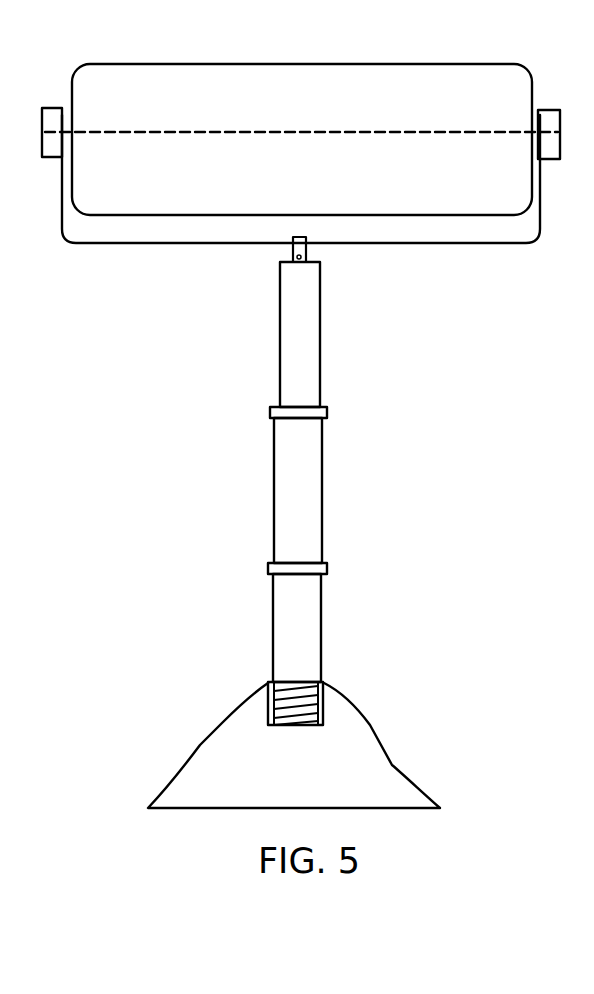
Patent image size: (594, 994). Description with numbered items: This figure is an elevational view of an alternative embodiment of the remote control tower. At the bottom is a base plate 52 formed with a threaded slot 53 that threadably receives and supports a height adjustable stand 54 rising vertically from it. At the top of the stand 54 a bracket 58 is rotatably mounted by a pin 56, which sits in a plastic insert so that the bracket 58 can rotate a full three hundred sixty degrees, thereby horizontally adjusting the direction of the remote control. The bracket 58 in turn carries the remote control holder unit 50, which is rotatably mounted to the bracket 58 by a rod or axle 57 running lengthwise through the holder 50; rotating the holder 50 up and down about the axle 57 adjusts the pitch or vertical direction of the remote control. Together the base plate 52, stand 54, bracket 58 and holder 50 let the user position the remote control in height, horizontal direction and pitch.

The remote control holder unit 50 is at (405, 216).
The base plate 52 is at (393, 767).
The threaded slot 53 is at (322, 677).
The height adjustable stand 54 is at (273, 600).
The pin 56 is at (307, 248).
The axle 57 is at (498, 136).
The bracket 58 is at (217, 245).